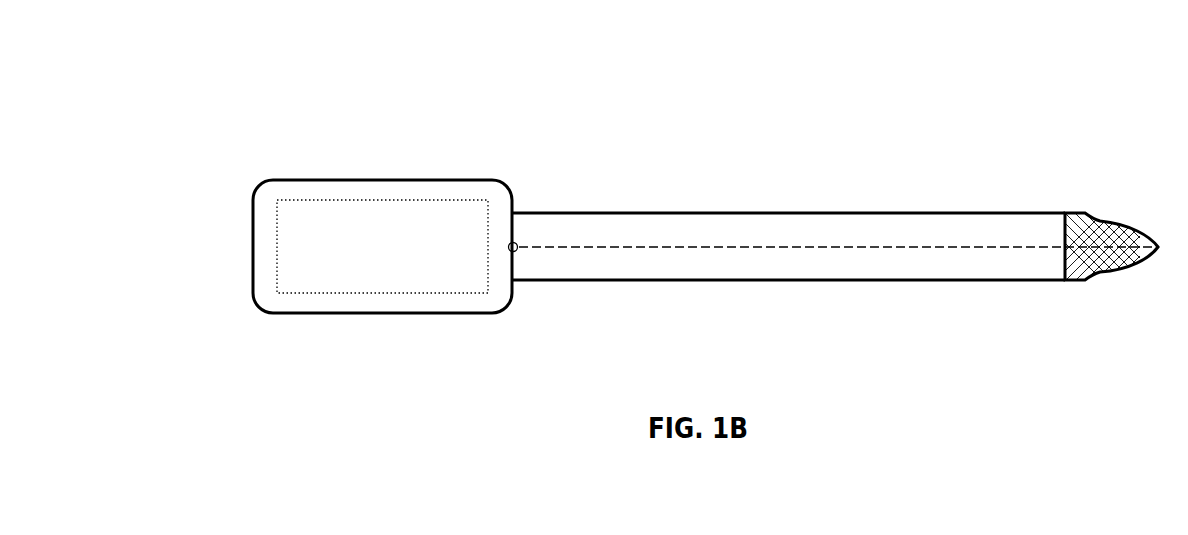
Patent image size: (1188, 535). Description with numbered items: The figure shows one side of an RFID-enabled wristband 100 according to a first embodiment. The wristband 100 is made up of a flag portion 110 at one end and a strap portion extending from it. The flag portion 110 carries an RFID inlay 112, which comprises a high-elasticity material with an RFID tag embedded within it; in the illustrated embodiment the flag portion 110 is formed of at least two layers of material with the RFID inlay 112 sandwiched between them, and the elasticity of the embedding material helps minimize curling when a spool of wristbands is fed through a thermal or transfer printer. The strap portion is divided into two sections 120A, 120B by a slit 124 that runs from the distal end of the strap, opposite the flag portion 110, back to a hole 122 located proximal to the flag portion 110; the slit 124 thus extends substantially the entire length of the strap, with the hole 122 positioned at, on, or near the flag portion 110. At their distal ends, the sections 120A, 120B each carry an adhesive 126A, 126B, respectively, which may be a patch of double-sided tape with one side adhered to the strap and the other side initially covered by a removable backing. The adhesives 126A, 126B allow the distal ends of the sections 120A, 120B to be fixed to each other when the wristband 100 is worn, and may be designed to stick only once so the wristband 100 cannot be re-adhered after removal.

The RFID-enabled wristband 100 is at (718, 126).
The flag portion 110 is at (287, 180).
The RFID inlay 112 is at (383, 293).
The section of strap portion 120A is at (705, 213).
The section of strap portion 120B is at (705, 280).
The hole 122 is at (516, 251).
The slit 124 is at (790, 247).
The adhesive 126A is at (1080, 223).
The adhesive 126B is at (1078, 272).